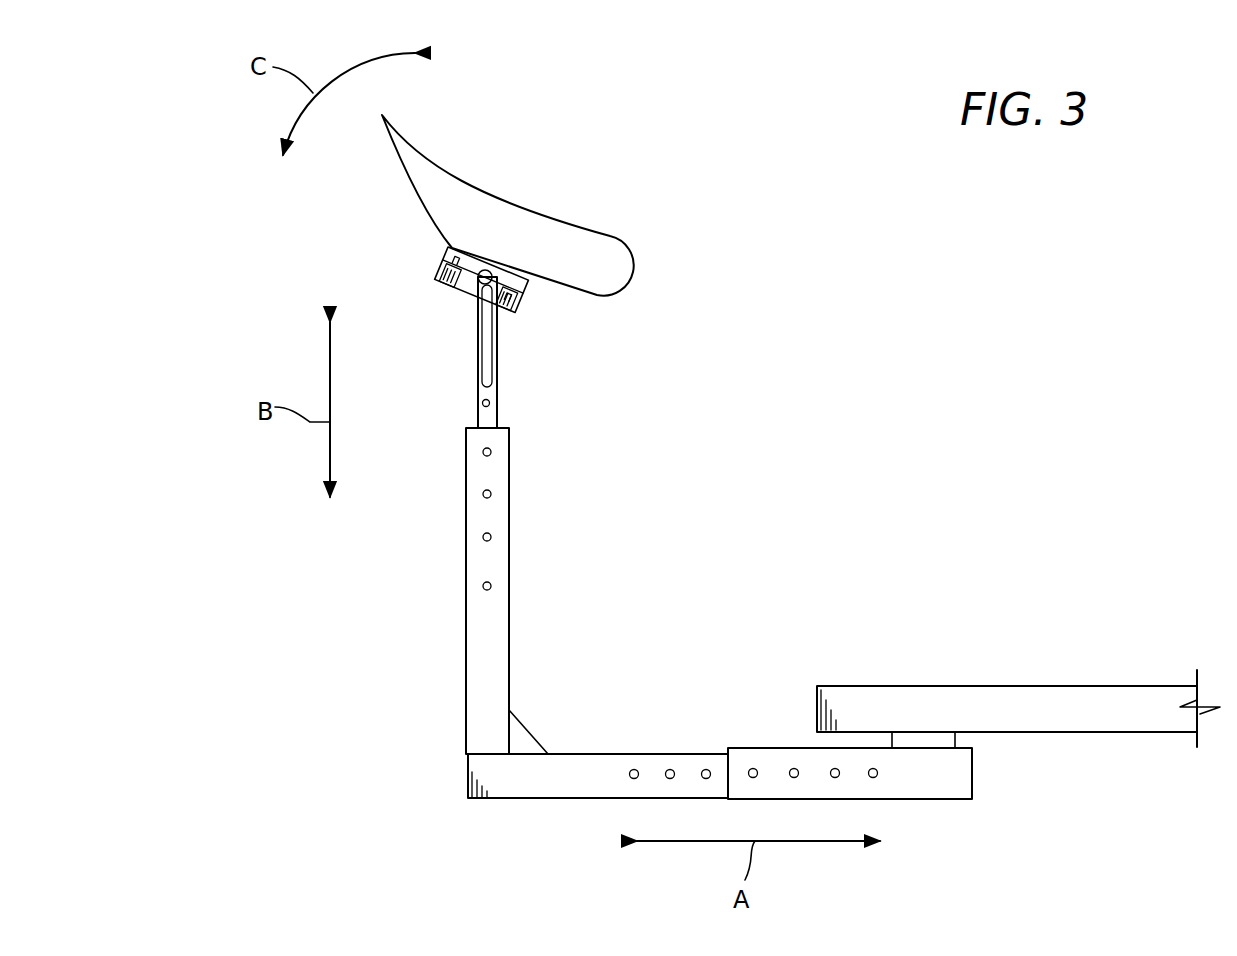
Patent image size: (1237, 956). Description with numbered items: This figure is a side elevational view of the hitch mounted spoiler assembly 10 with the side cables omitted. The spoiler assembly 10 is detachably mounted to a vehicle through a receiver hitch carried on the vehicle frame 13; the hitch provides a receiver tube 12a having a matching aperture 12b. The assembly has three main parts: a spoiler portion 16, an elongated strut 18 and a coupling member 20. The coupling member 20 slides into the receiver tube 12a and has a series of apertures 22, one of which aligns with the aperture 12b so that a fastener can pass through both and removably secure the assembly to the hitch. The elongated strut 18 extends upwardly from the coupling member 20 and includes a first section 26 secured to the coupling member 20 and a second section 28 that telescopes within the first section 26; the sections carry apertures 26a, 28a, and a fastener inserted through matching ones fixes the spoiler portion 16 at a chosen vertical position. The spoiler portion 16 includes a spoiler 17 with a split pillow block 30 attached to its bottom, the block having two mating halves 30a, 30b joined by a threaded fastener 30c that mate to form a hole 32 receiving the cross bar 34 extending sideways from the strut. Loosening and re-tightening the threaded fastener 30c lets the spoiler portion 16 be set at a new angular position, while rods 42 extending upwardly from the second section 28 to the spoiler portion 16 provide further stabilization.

The spoiler assembly 10 is at (756, 289).
The receiver tube 12a is at (904, 750).
The aperture 12b is at (752, 770).
The frame 13 is at (1052, 692).
The spoiler portion 16 is at (580, 135).
The spoiler 17 is at (603, 241).
The elongated strut 18 is at (650, 544).
The coupling member 20 is at (598, 750).
The aperture 22 is at (672, 770).
The first section 26 is at (530, 591).
The aperture 26a is at (491, 452).
The second section 28 is at (488, 352).
The aperture 28a is at (490, 403).
The split pillow block 30 is at (388, 240).
The mating half 30a is at (482, 278).
The mating half 30b is at (450, 276).
The threaded fastener 30c is at (507, 299).
The hole 32 is at (491, 274).
The cross bar 34 is at (478, 270).
The rod 42 is at (487, 350).